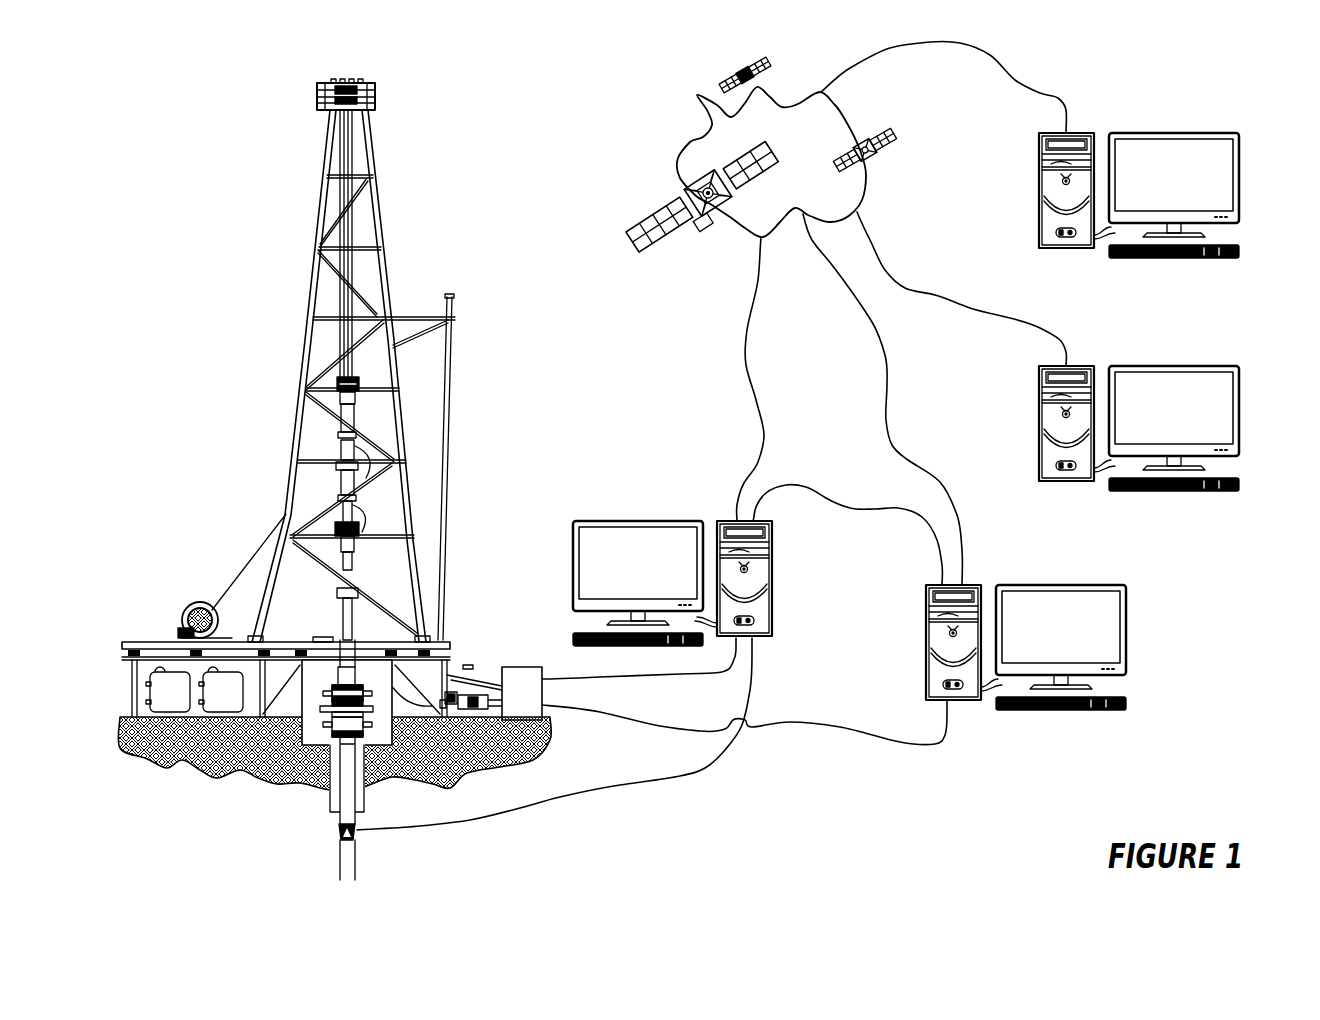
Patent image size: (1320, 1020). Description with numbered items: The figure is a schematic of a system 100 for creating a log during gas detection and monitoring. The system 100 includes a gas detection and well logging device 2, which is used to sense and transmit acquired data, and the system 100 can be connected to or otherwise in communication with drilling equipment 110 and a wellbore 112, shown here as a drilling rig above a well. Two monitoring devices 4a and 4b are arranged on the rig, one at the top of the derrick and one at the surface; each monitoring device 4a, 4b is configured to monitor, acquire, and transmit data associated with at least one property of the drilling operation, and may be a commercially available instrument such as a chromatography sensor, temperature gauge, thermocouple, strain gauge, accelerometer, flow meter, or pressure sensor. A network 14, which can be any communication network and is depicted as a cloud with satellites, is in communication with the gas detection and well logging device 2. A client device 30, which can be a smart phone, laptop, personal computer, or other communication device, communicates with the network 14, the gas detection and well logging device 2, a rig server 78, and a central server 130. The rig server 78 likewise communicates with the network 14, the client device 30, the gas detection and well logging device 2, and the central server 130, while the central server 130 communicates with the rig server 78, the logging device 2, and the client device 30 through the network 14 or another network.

The system 100 is at (186, 97).
The monitoring device 4a is at (361, 80).
The monitoring device 4b is at (468, 665).
The network 14 is at (700, 98).
The gas detection and well logging device 2 is at (773, 581).
The client device 30 is at (1039, 194).
The central server 130 is at (1039, 426).
The rig server 78 is at (926, 646).
The drilling equipment 110 is at (338, 831).
The wellbore 112 is at (336, 862).